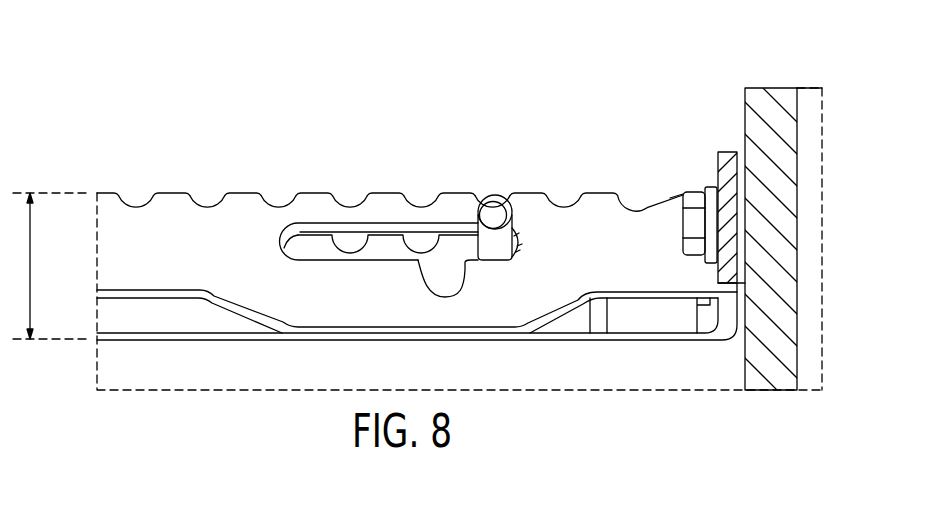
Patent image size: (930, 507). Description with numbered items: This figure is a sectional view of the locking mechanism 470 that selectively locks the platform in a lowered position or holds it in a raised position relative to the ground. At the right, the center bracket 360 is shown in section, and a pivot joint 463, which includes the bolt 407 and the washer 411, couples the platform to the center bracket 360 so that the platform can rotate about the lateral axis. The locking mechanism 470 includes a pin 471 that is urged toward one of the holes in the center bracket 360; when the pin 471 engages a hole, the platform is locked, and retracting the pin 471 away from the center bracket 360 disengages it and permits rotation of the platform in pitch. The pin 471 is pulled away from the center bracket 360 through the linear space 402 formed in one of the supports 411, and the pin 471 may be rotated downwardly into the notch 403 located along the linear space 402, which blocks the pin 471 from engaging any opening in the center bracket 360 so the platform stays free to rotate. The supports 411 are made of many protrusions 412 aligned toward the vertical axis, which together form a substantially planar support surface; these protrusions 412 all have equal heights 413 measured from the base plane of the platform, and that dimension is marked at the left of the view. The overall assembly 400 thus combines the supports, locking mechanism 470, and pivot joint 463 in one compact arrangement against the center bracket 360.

The center bracket 360 is at (768, 110).
The mounting assembly 400 is at (525, 148).
The linear space 402 is at (310, 250).
The notch 403 is at (445, 283).
The bolt 407 is at (683, 228).
The washer 411 is at (713, 188).
The protrusions 412 is at (173, 193).
The heights 413 is at (51, 266).
The pivot joint 463 is at (638, 128).
The locking mechanism 470 is at (412, 189).
The pin 471 is at (495, 212).